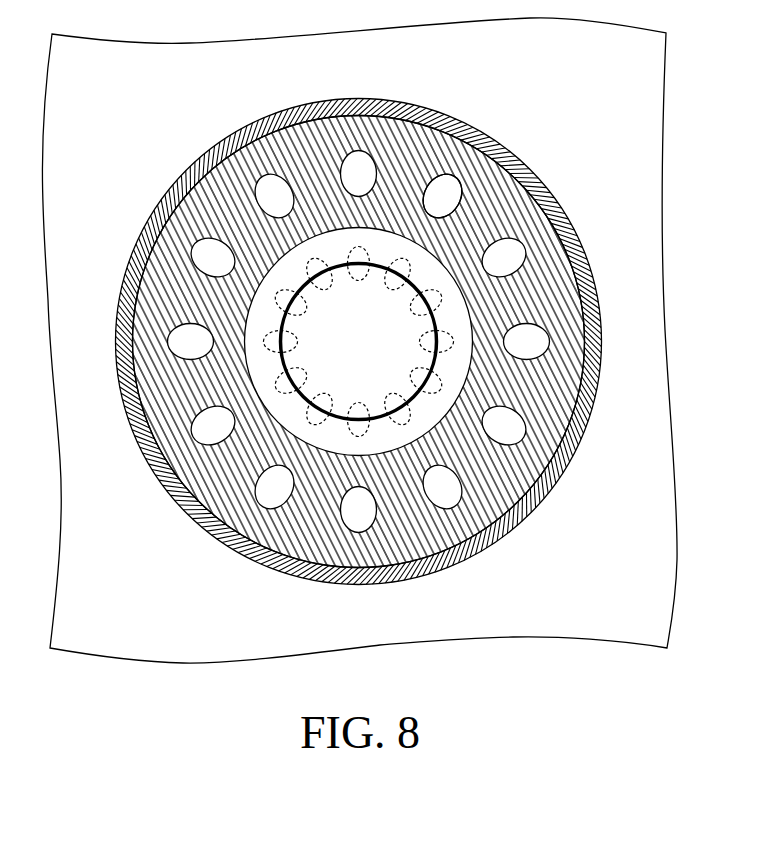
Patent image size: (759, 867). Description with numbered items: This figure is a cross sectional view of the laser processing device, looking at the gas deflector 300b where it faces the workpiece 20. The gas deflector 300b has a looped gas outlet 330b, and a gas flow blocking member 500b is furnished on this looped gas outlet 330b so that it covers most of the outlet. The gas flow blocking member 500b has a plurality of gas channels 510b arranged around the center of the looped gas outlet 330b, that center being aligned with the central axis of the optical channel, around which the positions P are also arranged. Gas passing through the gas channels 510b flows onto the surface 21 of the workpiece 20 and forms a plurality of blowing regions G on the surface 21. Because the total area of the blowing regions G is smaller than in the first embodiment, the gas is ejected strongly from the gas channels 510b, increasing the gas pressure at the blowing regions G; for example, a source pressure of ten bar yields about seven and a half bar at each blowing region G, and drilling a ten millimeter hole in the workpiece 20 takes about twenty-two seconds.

The workpiece 20 is at (643, 52).
The surface 21 is at (627, 107).
The gas deflector 300b is at (550, 210).
The looped gas outlet 330b is at (587, 328).
The gas flow blocking member 500b is at (513, 192).
The gas channel 510b is at (443, 193).
The blowing region G is at (315, 268).
The pin P is at (398, 405).